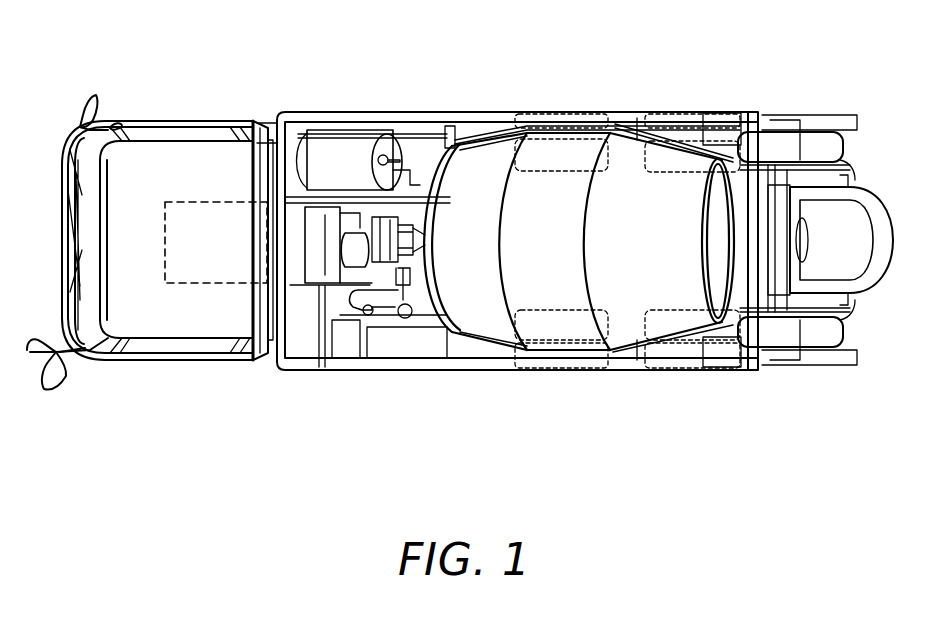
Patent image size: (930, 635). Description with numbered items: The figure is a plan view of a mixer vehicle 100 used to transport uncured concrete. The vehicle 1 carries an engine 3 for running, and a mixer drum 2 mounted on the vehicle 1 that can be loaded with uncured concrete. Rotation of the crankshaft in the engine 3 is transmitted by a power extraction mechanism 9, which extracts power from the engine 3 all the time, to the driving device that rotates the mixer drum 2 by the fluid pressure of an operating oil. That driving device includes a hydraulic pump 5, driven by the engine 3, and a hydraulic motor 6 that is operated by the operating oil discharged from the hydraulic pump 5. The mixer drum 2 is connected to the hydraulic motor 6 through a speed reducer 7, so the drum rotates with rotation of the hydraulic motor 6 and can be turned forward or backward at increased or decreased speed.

The mixer vehicle 100 is at (796, 87).
The vehicle 1 is at (487, 120).
The mixer drum 2 is at (562, 187).
The engine 3 is at (220, 197).
The hydraulic pump 5 is at (351, 250).
The hydraulic motor 6 is at (380, 322).
The speed reducer 7 is at (388, 190).
The power extraction mechanism 9 is at (292, 247).